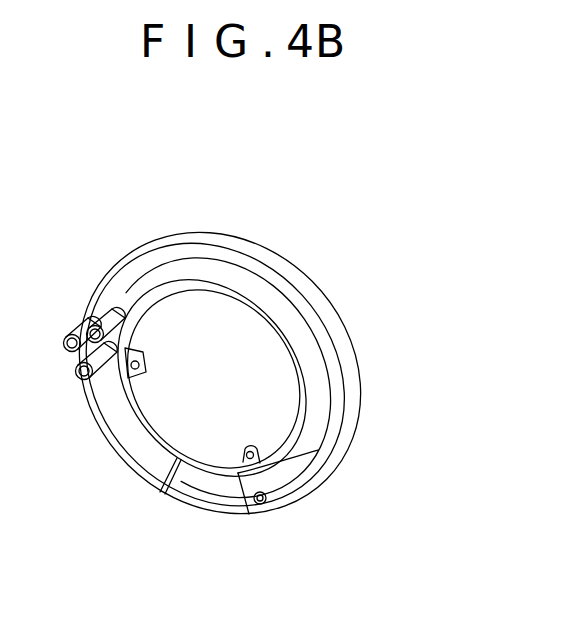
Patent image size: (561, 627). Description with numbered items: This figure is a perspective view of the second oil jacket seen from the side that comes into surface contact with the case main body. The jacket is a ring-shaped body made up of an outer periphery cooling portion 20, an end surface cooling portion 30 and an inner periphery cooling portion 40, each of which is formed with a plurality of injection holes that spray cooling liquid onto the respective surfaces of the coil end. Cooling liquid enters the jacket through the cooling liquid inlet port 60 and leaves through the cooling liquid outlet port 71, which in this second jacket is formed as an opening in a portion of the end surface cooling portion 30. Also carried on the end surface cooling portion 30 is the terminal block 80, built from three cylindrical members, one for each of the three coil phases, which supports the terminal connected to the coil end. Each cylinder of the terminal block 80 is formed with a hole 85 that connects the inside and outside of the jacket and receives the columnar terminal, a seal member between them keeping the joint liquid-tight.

The outer periphery cooling portion 20 is at (302, 283).
The end surface cooling portion 30 is at (157, 273).
The inner periphery cooling portion 40 is at (152, 428).
The cooling liquid inlet port 60 is at (264, 505).
The cooling liquid outlet port 71 is at (197, 498).
The terminal block 80 is at (83, 329).
The hole 85 is at (115, 333).